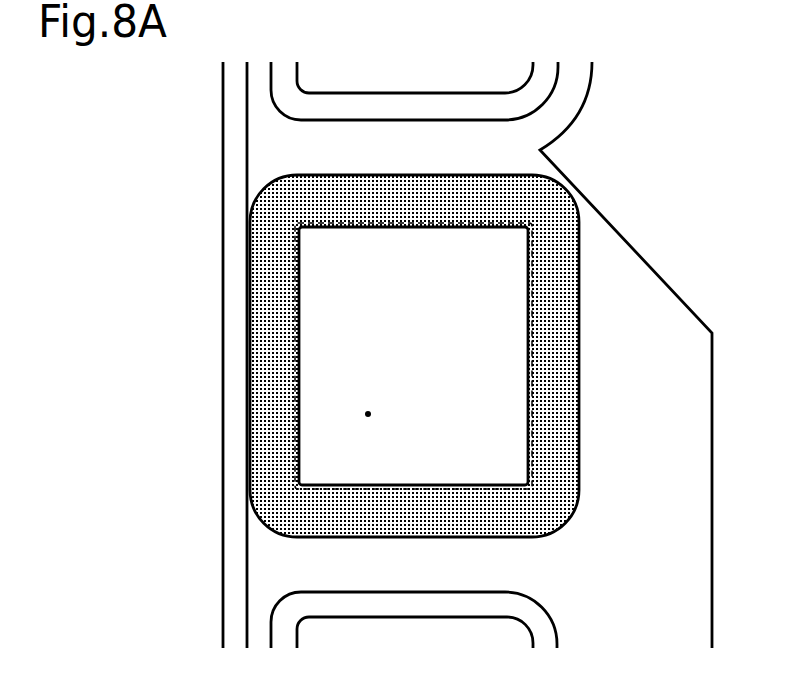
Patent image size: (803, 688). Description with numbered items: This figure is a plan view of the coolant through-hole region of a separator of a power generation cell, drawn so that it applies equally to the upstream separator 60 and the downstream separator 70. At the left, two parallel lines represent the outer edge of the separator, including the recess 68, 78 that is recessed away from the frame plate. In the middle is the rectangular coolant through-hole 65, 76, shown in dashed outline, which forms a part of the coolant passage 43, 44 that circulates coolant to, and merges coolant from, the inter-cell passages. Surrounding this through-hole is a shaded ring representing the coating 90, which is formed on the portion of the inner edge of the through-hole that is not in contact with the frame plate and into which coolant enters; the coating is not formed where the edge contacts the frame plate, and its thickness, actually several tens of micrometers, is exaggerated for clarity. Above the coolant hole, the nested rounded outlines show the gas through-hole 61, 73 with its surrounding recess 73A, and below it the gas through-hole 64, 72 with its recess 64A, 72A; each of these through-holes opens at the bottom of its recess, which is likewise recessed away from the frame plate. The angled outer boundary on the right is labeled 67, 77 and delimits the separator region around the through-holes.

The upstream separator 60 is at (155, 355).
The downstream separator 70 is at (207, 170).
The recess 68 is at (177, 355).
The recess 78 is at (232, 392).
The through-hole 61 is at (470, 95).
The through-hole 73 is at (524, 88).
The recess 73A is at (382, 107).
The outer peripheral wall 67 is at (626, 355).
The outer peripheral wall 77 is at (668, 283).
The coating 90 is at (568, 402).
The coolant intake passage 43 is at (327, 356).
The coolant discharge passage 44 is at (368, 414).
The through-hole 65 is at (326, 356).
The through-hole 76 is at (250, 304).
The through-hole 64 is at (433, 599).
The through-hole 72 is at (455, 624).
The recess 64A is at (415, 640).
The recess 72A is at (377, 607).